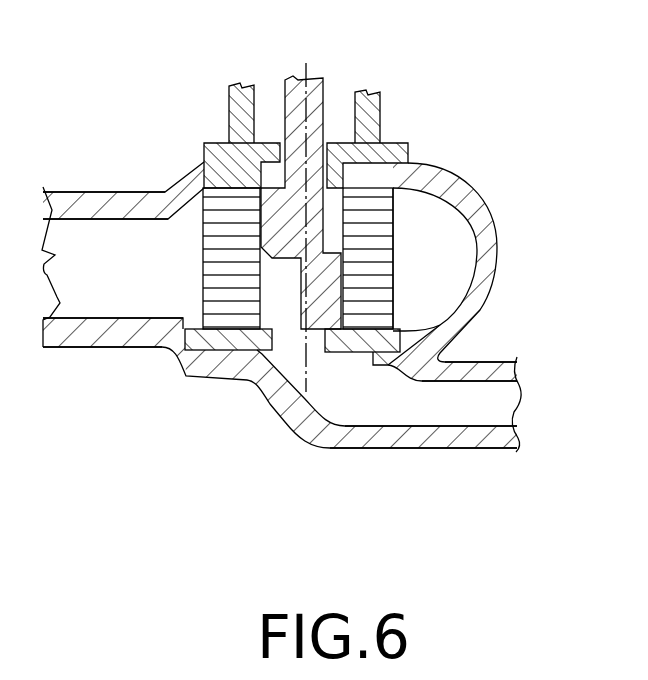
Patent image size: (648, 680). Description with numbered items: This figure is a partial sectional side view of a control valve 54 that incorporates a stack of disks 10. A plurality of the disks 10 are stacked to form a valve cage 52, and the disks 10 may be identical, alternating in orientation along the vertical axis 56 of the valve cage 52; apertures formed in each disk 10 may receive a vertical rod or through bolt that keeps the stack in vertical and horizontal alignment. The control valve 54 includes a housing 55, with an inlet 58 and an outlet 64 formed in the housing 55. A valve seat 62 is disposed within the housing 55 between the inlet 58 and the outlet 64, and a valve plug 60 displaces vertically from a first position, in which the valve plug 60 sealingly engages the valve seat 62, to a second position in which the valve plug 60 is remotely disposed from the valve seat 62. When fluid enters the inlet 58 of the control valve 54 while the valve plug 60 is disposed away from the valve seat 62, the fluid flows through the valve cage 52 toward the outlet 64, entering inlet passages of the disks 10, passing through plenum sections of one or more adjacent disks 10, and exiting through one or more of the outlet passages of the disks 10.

The disk 10 is at (200, 243).
The valve cage 52 is at (395, 259).
The control valve 54 is at (317, 271).
The housing 55 is at (488, 228).
The vertical axis 56 is at (307, 63).
The inlet 58 is at (490, 405).
The valve plug 60 is at (333, 200).
The valve seat 62 is at (348, 343).
The outlet 64 is at (85, 268).